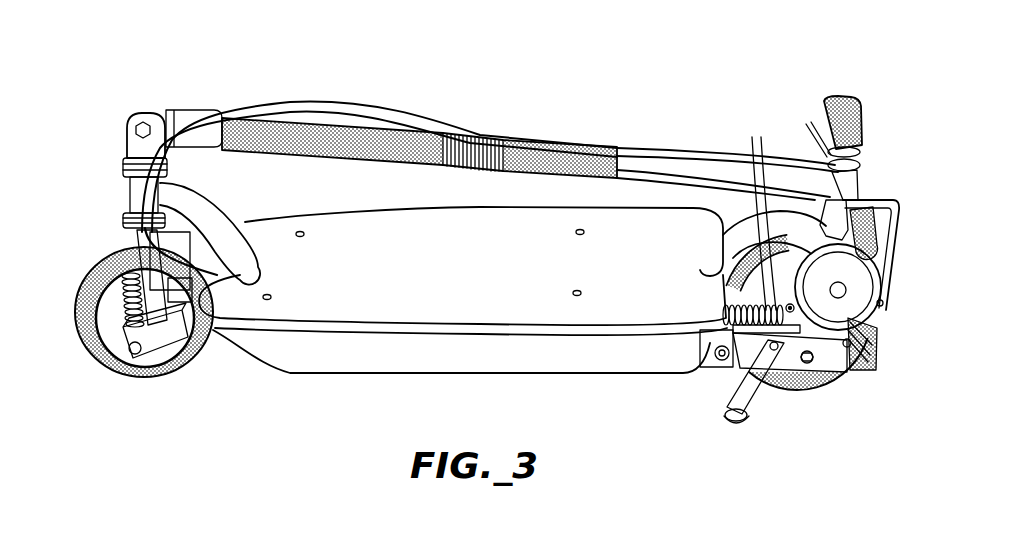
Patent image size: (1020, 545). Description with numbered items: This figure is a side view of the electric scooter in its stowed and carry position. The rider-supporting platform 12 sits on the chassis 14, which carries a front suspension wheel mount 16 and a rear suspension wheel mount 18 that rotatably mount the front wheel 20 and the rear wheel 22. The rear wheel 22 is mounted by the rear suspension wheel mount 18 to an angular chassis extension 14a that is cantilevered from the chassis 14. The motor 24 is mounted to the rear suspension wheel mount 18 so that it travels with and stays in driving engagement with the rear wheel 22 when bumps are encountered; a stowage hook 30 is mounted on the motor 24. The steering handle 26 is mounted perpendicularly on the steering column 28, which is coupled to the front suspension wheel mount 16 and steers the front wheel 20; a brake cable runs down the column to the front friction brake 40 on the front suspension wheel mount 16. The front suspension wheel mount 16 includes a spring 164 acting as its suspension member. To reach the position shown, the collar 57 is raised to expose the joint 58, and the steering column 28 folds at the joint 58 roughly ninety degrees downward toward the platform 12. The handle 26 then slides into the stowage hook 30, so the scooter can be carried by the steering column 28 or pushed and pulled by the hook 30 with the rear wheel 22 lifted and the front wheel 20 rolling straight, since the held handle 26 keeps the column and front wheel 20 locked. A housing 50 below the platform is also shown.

The platform 12 is at (471, 278).
The chassis 14 is at (198, 212).
The angular chassis extension 14a is at (705, 372).
The front suspension wheel mount 16 is at (123, 377).
The rear suspension wheel mount 18 is at (799, 402).
The front wheel 20 is at (120, 248).
The rear wheel 22 is at (830, 387).
The motor 24 is at (848, 310).
The steering handle 26 is at (852, 104).
The steering column 28 is at (563, 153).
The stowage hook 30 is at (873, 202).
The front friction brake 40 is at (200, 364).
The battery housing 50 is at (377, 370).
The collar 57 is at (180, 113).
The joint 58 is at (145, 121).
The spring 164 is at (752, 140).